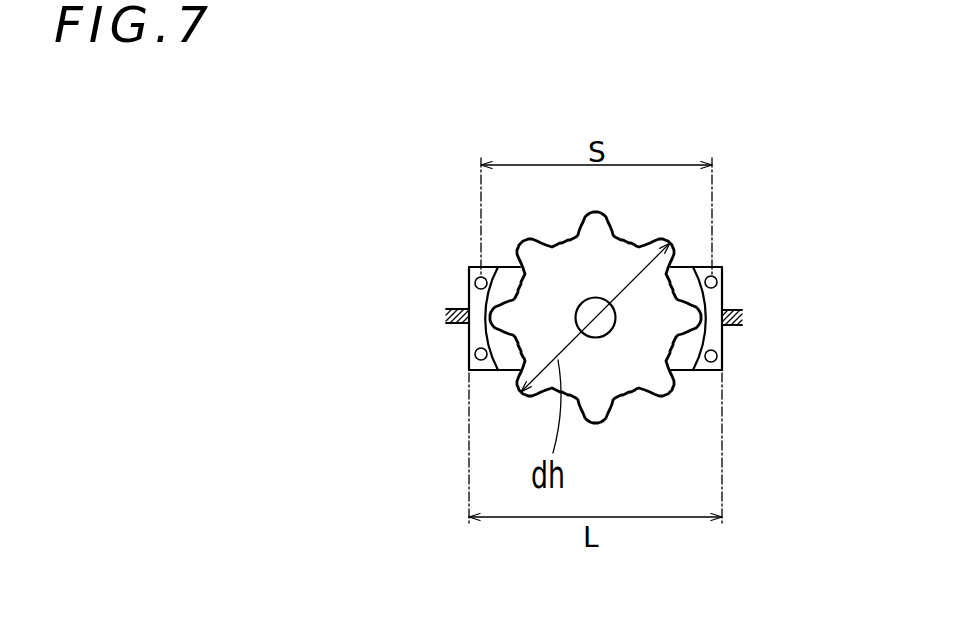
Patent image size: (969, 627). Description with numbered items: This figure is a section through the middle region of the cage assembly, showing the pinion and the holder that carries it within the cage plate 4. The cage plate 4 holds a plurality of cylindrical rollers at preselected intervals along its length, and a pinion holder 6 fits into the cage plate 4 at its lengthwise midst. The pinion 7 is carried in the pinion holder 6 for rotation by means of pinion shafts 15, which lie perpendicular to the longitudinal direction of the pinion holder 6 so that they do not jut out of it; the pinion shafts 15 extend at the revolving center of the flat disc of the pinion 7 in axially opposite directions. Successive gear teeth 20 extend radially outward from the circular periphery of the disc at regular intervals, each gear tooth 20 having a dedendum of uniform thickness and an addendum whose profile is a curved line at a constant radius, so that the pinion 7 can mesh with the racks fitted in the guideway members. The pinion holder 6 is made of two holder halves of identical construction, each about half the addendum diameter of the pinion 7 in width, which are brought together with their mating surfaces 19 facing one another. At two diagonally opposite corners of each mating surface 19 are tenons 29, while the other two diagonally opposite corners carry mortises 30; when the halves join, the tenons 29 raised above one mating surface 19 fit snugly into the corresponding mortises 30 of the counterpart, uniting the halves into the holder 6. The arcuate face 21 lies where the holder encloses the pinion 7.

The cage plate 4 is at (740, 318).
The pinion holder 6 is at (716, 297).
The pinion 7 is at (570, 262).
The pinion shaft 15 is at (596, 305).
The mating surface 19 is at (715, 340).
The gear tooth 20 is at (665, 383).
The arcuate bearing face 21 is at (708, 300).
The tenon 29 is at (717, 361).
The mortise 30 is at (718, 280).